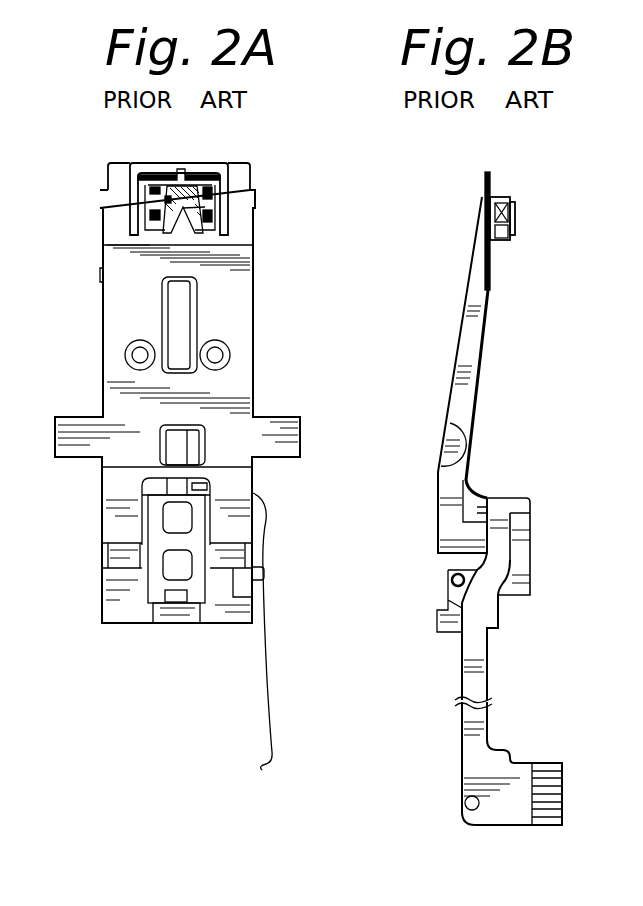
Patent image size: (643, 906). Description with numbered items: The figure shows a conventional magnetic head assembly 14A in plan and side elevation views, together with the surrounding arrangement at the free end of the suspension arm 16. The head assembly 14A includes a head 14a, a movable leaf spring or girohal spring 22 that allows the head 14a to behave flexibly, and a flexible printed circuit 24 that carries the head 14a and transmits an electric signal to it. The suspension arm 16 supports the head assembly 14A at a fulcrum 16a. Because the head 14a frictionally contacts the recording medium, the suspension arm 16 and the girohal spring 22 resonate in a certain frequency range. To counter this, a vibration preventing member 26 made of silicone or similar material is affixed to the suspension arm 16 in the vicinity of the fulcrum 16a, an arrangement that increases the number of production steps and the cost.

In FIG. 2A, the head assembly 14A is at (208, 158).
In FIG. 2B, the head assembly 14A is at (518, 223).
In FIG. 2B, the head 14a is at (511, 205).
In FIG. 2A, the suspension arm 16 is at (242, 303).
In FIG. 2B, the suspension arm 16 is at (475, 393).
In FIG. 2A, the fulcrum 16a is at (183, 208).
In FIG. 2A, the girohal spring 22 is at (243, 183).
In FIG. 2B, the girohal spring 22 is at (488, 174).
In FIG. 2A, the flexible printed circuit 24 is at (148, 177).
In FIG. 2B, the flexible printed circuit 24 is at (484, 720).
In FIG. 2A, the vibration preventing member 26 is at (178, 186).